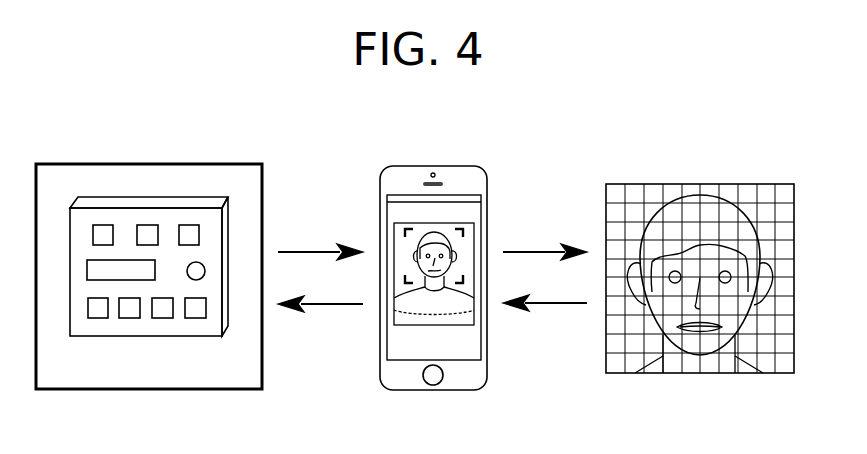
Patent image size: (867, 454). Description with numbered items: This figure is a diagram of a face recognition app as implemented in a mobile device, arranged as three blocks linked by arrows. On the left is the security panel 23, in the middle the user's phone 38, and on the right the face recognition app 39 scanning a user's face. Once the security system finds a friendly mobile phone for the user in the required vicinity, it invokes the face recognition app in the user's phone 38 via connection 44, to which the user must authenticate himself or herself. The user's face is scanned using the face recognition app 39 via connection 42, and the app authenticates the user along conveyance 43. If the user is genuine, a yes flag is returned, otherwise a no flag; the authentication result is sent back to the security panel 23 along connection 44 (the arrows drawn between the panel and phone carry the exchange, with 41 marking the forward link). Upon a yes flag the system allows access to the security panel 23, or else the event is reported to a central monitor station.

The security panel 23 is at (148, 164).
The user's phone 38 is at (435, 166).
The face recognition app 39 is at (709, 184).
The communication from security panel to mobile device 41 is at (309, 252).
The connection 42 is at (535, 252).
The conveyance 43 is at (561, 303).
The connection 44 is at (336, 304).